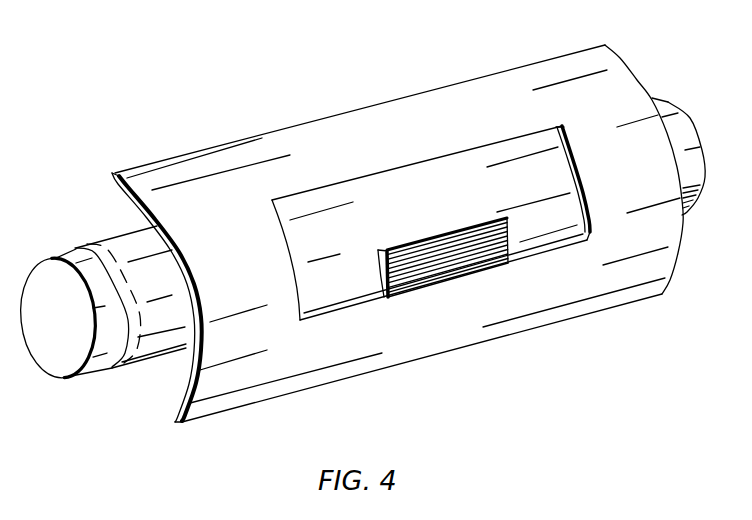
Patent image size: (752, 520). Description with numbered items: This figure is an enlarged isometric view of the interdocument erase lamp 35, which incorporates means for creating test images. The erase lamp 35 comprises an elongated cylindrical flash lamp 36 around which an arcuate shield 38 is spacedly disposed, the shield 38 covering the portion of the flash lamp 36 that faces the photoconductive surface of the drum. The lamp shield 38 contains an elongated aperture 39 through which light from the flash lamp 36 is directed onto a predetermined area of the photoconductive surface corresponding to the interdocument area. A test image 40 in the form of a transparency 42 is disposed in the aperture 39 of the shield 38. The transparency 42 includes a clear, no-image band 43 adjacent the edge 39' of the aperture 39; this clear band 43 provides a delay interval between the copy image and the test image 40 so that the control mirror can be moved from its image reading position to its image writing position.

The erase lamp 35 is at (408, 226).
The flash lamp 36 is at (97, 246).
The shield 38 is at (197, 150).
The aperture 39 is at (431, 223).
The edge of aperture 39' is at (443, 292).
The test image 40 is at (379, 284).
The transparency 42 is at (460, 233).
The clear band 43 is at (492, 268).